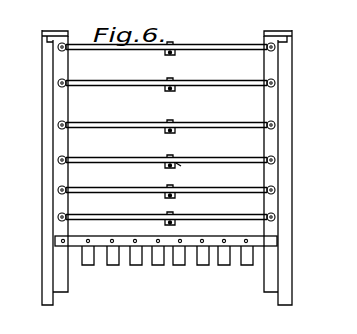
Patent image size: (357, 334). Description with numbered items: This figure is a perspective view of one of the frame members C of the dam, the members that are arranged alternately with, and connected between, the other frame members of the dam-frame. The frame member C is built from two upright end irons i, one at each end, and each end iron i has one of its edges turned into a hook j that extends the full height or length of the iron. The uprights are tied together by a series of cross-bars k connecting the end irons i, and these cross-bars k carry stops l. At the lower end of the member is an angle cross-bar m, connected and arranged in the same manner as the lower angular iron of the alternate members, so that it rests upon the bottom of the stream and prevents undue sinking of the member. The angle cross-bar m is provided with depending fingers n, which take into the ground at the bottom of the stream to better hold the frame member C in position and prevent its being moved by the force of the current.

The frame member C is at (158, 173).
The hook j is at (48, 147).
The end iron i is at (58, 283).
The cross-bar k is at (117, 55).
The stop l is at (170, 90).
The finger n is at (180, 262).
The angle cross-bar m is at (161, 267).